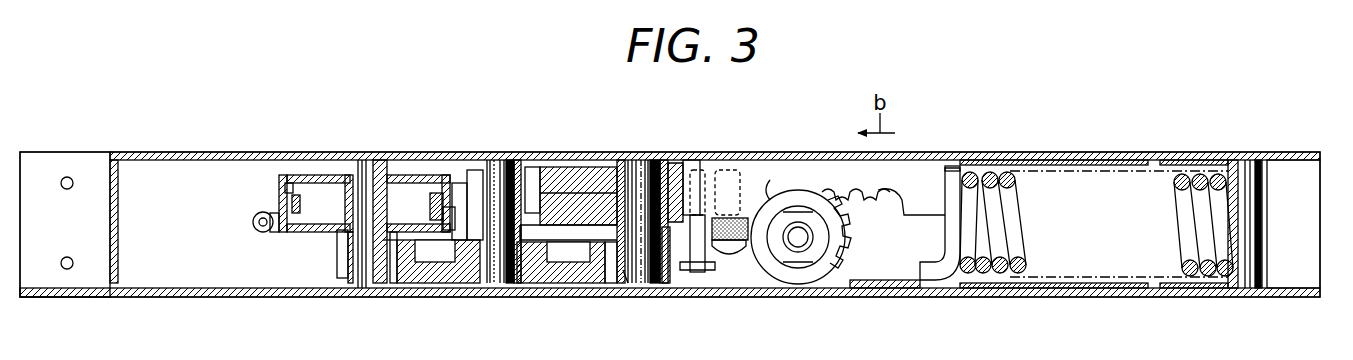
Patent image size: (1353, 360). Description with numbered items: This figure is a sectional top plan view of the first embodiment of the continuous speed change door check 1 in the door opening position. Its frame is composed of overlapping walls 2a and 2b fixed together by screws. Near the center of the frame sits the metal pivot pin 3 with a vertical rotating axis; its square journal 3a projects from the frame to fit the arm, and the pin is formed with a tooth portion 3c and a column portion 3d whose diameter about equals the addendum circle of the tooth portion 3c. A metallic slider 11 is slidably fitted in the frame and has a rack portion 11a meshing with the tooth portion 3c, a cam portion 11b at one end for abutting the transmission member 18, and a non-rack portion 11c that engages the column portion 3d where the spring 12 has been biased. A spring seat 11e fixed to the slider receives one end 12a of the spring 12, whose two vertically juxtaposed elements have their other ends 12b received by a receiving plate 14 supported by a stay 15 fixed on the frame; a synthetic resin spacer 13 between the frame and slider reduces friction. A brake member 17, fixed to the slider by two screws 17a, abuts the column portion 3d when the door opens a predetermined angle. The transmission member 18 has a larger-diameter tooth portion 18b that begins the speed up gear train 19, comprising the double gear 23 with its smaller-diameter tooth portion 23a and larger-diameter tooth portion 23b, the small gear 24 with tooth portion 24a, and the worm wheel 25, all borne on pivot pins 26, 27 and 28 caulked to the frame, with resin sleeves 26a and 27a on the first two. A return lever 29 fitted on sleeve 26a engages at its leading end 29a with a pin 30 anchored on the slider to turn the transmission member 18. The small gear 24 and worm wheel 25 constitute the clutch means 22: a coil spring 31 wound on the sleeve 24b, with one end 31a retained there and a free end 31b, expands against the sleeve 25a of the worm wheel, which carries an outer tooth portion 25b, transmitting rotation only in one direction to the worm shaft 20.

The door closer assembly 1 is at (335, 100).
The frame wall 2a is at (188, 156).
The frame wall 2b is at (186, 292).
The pivot pin 3 is at (815, 272).
The journal 3a is at (790, 258).
The tooth portion 3c is at (852, 238).
The column portion 3d is at (830, 193).
The slider 11 is at (936, 165).
The rack portion 11a is at (888, 200).
The cam portion 11b is at (690, 175).
The non-rack portion 11c is at (780, 195).
The spring seat 11e is at (952, 168).
The spring 12 is at (1018, 228).
The spring end 12a is at (992, 176).
The spring other end 12b is at (1200, 178).
The spacer 13 is at (1086, 160).
The receiving plate 14 is at (1232, 290).
The stay 15 is at (1250, 290).
The brake member 17 is at (718, 190).
The screw 17a is at (735, 258).
The transmission member 18 is at (580, 185).
The larger-diameter tooth portion 18b is at (532, 175).
The speed up gear train 19 is at (460, 128).
The worm shaft 20 is at (256, 222).
The clutch means 22 is at (278, 272).
The double gear 23 is at (460, 268).
The smaller-diameter tooth portion 23a is at (476, 175).
The larger-diameter tooth portion 23b is at (384, 284).
The small gear 24 is at (382, 286).
The tooth portion 24a is at (337, 275).
The sleeve 24b is at (425, 262).
The worm wheel 25 is at (318, 180).
The sleeve 25a is at (280, 196).
The tooth portion 25b is at (292, 204).
The pivot pin 26 is at (640, 170).
The sleeve 26a is at (624, 288).
The pivot pin 27 is at (500, 165).
The sleeve 27a is at (500, 272).
The pivot pin 28 is at (362, 165).
The return lever 29 is at (665, 275).
The leading end 29a is at (712, 272).
The pin 30 is at (698, 274).
The coil spring 31 is at (285, 178).
The coil spring end 31a is at (295, 238).
The free end 31b is at (428, 178).